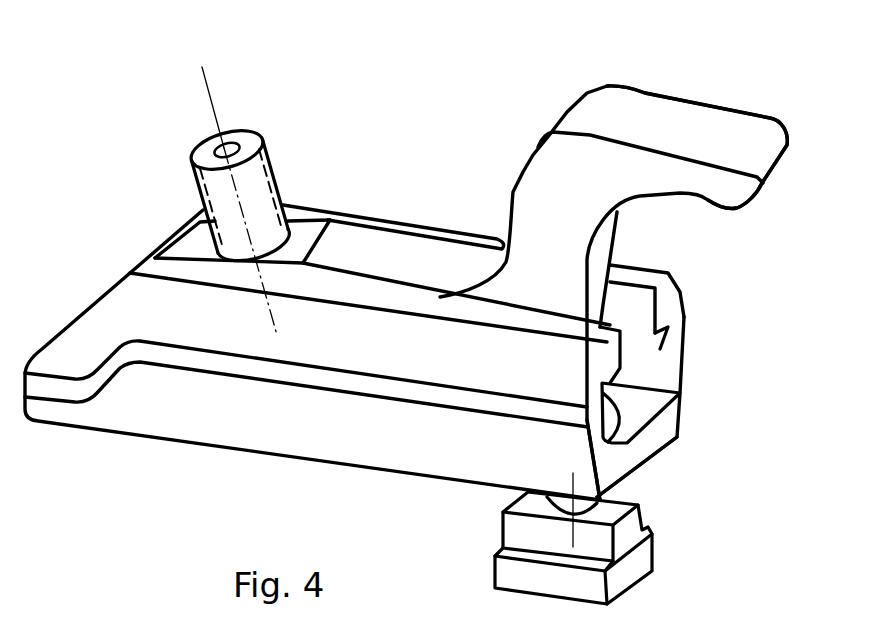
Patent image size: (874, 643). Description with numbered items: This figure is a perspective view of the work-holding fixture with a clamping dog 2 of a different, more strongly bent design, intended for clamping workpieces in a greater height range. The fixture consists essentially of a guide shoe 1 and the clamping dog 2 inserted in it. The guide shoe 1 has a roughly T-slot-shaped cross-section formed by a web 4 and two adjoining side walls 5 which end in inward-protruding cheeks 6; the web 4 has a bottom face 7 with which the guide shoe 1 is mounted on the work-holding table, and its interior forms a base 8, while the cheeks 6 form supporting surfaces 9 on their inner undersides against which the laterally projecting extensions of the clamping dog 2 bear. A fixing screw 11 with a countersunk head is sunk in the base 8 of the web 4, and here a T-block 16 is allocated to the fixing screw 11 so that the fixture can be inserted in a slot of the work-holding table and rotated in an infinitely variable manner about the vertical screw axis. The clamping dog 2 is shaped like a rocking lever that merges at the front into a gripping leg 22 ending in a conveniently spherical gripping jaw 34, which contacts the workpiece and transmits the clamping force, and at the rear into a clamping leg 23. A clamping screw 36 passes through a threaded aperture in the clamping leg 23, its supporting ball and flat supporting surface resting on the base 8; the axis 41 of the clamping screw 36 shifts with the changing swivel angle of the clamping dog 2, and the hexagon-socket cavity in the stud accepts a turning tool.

The guide shoe 1 is at (170, 401).
The clamping dog 2 is at (625, 87).
The web 4 is at (642, 438).
The side walls 5 is at (413, 388).
The cheeks 6 is at (633, 300).
The bottom face 7 is at (637, 478).
The base 8 is at (633, 403).
The supporting surfaces 9 is at (657, 347).
The fixing screw 11 is at (543, 497).
The T-block 16 is at (643, 560).
The gripping leg 22 is at (535, 210).
The clamping leg 23 is at (353, 242).
The gripping jaw 34 is at (727, 210).
The clamping screw 36 is at (251, 130).
The axis 41 is at (275, 338).